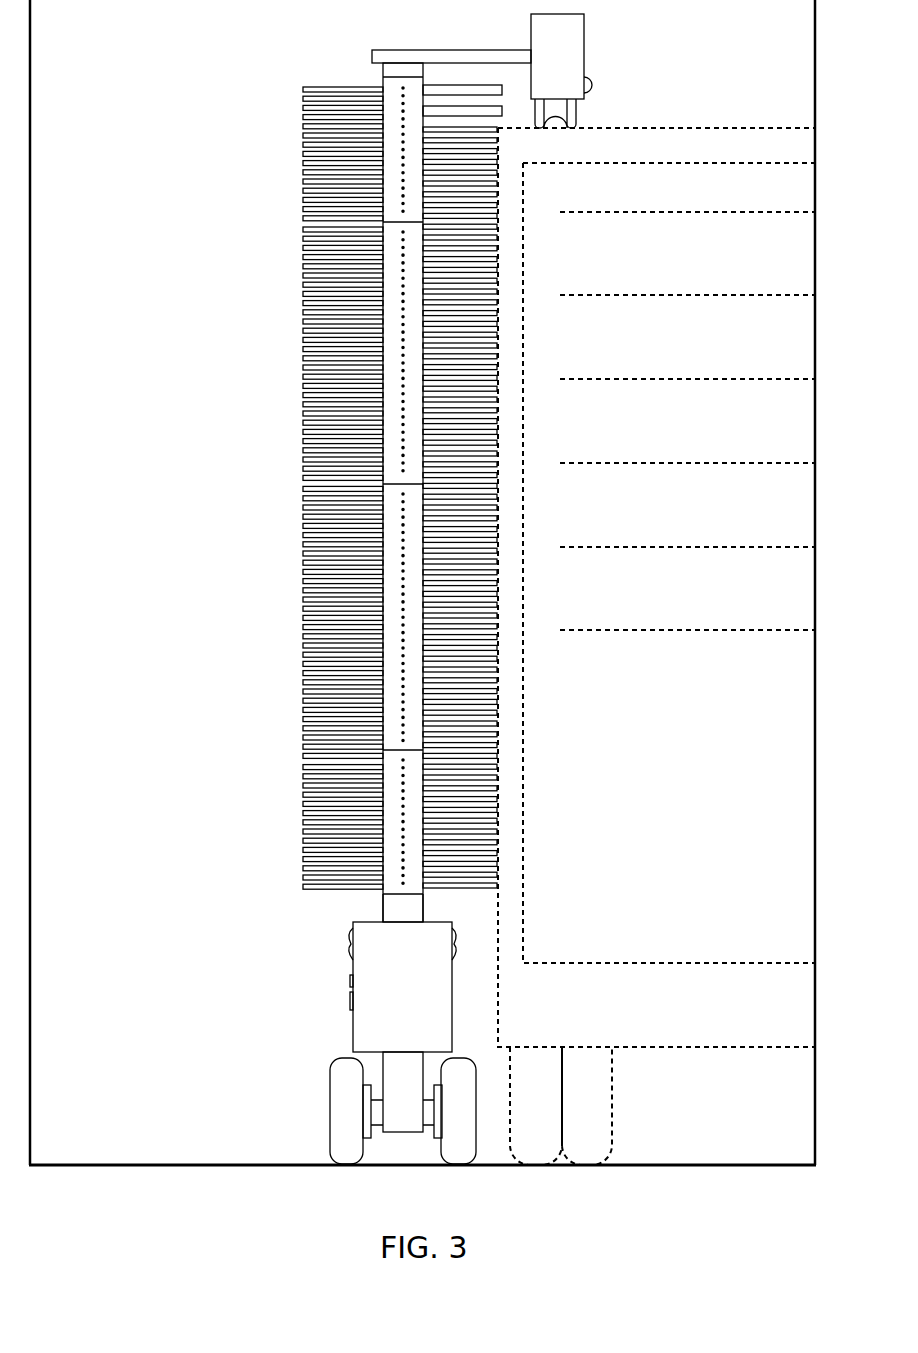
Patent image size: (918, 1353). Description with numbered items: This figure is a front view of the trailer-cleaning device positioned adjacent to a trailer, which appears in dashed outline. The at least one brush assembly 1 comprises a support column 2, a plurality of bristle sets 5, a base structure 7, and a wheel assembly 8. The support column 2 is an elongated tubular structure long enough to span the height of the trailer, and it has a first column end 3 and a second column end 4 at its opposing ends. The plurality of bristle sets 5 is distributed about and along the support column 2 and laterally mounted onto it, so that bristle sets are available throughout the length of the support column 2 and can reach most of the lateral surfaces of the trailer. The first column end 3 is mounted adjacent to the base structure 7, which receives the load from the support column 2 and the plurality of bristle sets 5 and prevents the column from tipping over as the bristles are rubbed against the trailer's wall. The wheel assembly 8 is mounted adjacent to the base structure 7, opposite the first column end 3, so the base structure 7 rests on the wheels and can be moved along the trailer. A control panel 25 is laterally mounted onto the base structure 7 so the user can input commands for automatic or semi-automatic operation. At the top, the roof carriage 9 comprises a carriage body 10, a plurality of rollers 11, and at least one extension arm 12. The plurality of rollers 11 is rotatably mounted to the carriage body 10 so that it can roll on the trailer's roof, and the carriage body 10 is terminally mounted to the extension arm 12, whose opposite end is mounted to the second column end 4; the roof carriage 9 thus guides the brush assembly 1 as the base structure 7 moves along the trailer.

The brush assembly 1 is at (186, 477).
The support column 2 is at (405, 888).
The first column end 3 is at (401, 914).
The second column end 4 is at (386, 70).
The plurality of bristle sets 5 is at (303, 358).
The base structure 7 is at (357, 1027).
The wheel assembly 8 is at (458, 1157).
The roof carriage 9 is at (684, 38).
The carriage body 10 is at (576, 24).
The plurality of rollers 11 is at (572, 115).
The extension arm 12 is at (408, 56).
The control panel 25 is at (342, 971).